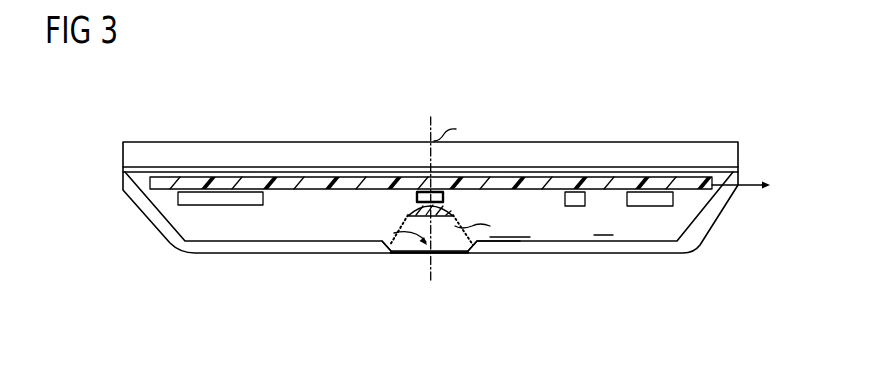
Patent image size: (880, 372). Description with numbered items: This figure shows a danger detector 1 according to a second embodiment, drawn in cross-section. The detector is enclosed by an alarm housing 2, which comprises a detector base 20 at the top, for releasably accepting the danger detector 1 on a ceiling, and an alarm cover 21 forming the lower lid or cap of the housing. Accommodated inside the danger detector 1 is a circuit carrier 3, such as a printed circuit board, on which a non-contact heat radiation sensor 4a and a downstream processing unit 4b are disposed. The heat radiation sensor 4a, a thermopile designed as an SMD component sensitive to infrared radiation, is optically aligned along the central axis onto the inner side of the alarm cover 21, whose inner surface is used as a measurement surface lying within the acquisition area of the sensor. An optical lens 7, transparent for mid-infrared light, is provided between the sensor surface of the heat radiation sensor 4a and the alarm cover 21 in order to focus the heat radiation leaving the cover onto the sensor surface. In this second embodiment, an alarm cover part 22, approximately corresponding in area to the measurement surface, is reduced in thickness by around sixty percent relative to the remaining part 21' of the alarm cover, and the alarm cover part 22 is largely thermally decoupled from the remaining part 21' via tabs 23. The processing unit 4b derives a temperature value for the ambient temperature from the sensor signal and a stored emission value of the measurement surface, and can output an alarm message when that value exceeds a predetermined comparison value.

The danger detector 1 is at (121, 141).
The alarm housing 2 is at (402, 225).
The detector base 20 is at (133, 162).
The alarm cover 21 is at (442, 237).
The remaining part of the alarm cover 21' is at (497, 273).
The alarm cover part 22 is at (432, 253).
The tabs 23 is at (386, 253).
The circuit carrier 3 is at (147, 188).
The heat radiation sensor 4a is at (443, 196).
The processing unit 4b is at (255, 197).
The optical lens 7 is at (412, 210).